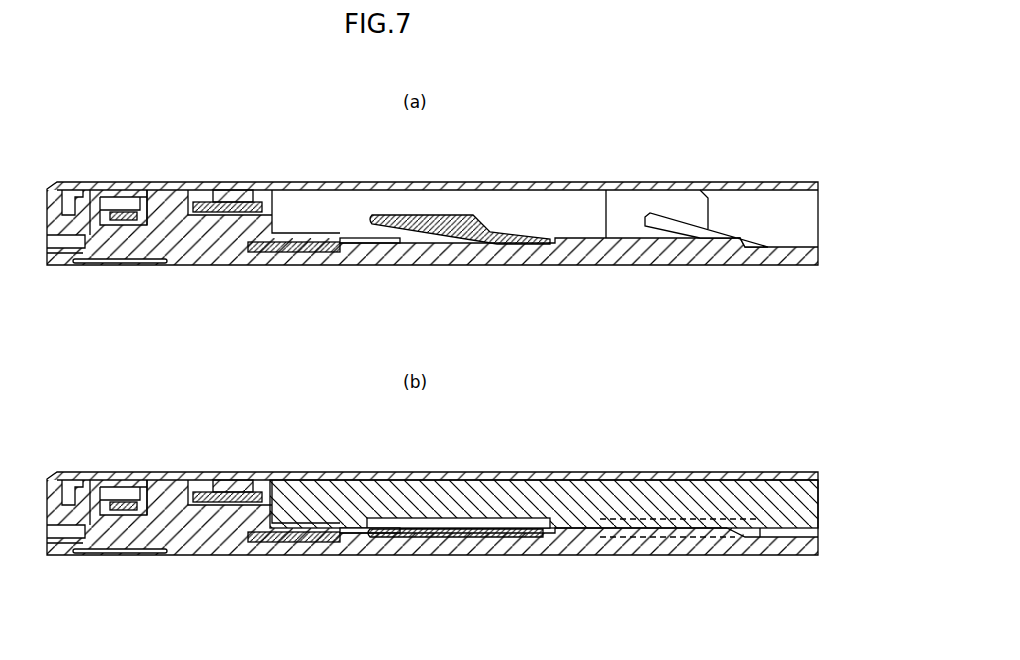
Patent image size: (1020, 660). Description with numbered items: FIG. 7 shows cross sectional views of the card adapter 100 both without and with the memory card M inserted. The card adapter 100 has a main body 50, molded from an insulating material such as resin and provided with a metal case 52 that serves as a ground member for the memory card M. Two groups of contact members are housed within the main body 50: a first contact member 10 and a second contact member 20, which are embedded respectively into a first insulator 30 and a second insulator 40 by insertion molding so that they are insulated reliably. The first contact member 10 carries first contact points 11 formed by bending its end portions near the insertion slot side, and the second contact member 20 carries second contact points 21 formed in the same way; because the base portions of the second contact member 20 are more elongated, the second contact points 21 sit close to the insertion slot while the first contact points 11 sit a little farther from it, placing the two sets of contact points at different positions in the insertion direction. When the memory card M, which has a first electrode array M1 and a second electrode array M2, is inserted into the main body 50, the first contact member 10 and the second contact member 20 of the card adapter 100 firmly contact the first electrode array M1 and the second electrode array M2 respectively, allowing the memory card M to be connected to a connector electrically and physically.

The card adapter 100 is at (150, 169).
The first contact member 10 is at (423, 236).
The first contact points 11 is at (385, 212).
The second contact member 20 is at (668, 238).
The second contact points 21 is at (650, 215).
The first insulator 30 is at (178, 238).
The second insulator 40 is at (247, 182).
The main body 50 is at (597, 253).
The metal case 52 is at (538, 182).
The memory card M is at (560, 495).
The first electrode array M1 is at (413, 517).
The second electrode array M2 is at (682, 519).